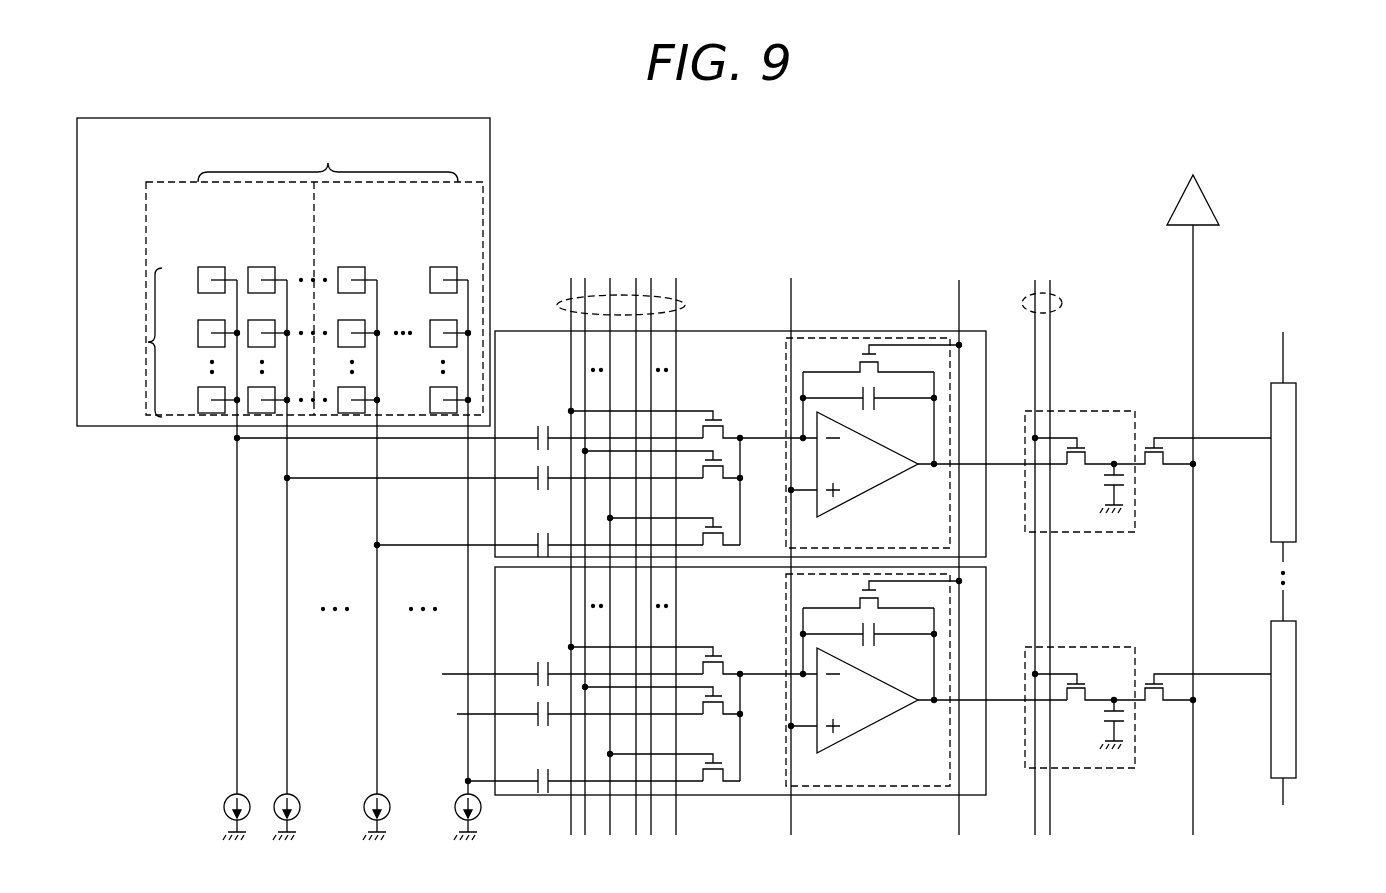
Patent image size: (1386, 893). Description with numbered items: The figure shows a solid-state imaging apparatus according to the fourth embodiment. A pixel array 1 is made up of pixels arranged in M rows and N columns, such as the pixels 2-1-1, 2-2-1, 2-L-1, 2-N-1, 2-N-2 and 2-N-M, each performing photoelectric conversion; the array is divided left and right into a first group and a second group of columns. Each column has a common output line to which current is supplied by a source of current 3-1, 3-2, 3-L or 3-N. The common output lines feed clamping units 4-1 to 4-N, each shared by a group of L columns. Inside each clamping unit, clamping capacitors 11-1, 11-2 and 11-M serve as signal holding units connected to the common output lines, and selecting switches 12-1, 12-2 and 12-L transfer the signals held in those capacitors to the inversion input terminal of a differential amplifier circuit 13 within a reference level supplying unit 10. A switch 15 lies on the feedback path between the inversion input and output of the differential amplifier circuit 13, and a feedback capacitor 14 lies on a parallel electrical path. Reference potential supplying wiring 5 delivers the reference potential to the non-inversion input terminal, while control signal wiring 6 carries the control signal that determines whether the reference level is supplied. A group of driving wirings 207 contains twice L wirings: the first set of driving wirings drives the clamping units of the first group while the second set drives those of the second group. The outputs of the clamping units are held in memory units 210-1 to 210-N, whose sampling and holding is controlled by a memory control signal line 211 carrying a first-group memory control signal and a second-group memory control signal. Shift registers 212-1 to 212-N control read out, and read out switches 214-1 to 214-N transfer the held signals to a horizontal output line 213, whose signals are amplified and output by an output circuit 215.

The pixel array 1 is at (77, 188).
The pixel 2-1-1 is at (207, 266).
The pixel 2-2-1 is at (267, 266).
The pixel 2-L-1 is at (362, 266).
The pixel 2-N-1 is at (443, 266).
The pixel 2-N-2 is at (430, 327).
The pixel 2-N-M is at (430, 391).
The source of current 3-1 is at (230, 797).
The source of current 3-2 is at (281, 797).
The source of current 3-L is at (370, 797).
The source of current 3-N is at (461, 797).
The clamping unit 4-1 is at (986, 388).
The clamping unit 4-N is at (986, 624).
The reference potential supplying wiring 5 is at (793, 315).
The control signal wiring 6 is at (961, 315).
The reference level supplying unit 10 is at (785, 353).
The clamping capacitor 11-1 is at (548, 424).
The clamping capacitor 11-2 is at (540, 467).
The clamping capacitor 11-M is at (540, 536).
The selecting switch 12-1 is at (727, 426).
The selecting switch 12-2 is at (727, 469).
The selecting switch 12-L is at (727, 535).
The differential amplifier circuit 13 is at (880, 487).
The feedback capacitor 14 is at (870, 412).
The switch 15 is at (858, 364).
The group of driving wirings 207 is at (687, 302).
The memory unit 210-1 is at (1148, 454).
The memory unit 210-N is at (1148, 690).
The memory control signal line 211 is at (1063, 300).
The shift register 212-1 is at (1296, 383).
The shift register 212-N is at (1297, 621).
The horizontal output line 213 is at (1195, 312).
The read out switch 214-1 is at (1152, 464).
The read out switch 214-N is at (1152, 700).
The output circuit 215 is at (1213, 210).